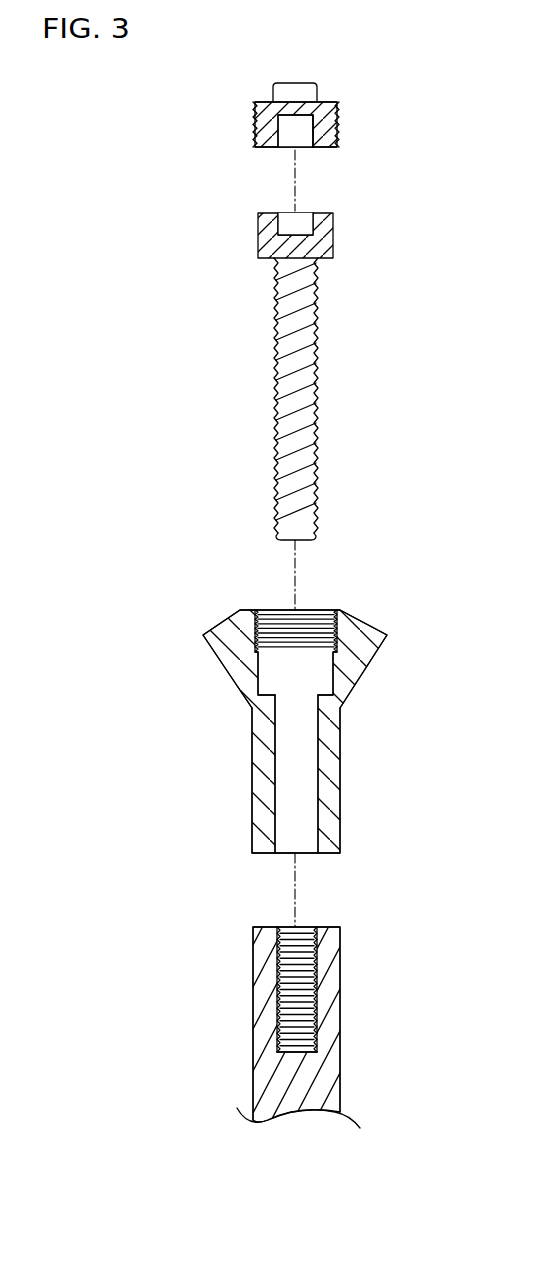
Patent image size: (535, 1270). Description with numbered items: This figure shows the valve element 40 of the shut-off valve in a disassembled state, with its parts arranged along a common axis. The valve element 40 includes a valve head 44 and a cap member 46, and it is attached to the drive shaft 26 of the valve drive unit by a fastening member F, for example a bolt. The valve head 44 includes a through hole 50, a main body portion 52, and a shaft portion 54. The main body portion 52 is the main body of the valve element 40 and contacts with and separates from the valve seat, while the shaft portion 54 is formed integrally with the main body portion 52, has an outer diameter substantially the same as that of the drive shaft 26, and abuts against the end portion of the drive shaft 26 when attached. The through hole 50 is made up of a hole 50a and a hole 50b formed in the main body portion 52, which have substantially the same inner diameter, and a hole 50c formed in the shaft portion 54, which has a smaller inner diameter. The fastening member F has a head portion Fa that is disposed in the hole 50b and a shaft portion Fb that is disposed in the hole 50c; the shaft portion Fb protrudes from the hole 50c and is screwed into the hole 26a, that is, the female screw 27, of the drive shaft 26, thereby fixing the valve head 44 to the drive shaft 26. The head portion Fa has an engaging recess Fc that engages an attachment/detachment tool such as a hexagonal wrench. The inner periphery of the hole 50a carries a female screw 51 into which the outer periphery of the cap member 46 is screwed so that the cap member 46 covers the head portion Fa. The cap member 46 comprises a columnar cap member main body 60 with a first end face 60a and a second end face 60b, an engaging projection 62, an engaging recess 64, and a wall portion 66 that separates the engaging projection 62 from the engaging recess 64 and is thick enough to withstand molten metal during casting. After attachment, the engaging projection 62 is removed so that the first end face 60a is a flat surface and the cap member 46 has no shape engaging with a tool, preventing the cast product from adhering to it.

The valve element 40 is at (121, 100).
The cap member 46 is at (165, 66).
The engaging projection 62 is at (272, 86).
The cap member main body 60 is at (241, 132).
The first end face 60a is at (322, 104).
The second end face 60b is at (267, 148).
The engaging recess 64 is at (305, 144).
The wall portion 66 is at (326, 109).
The fastening member F is at (404, 185).
The head portion Fa is at (334, 241).
The shaft portion Fb is at (318, 315).
The engaging recess Fc is at (300, 233).
The valve head 44 is at (165, 705).
The through hole 50 is at (450, 583).
The hole 50a is at (356, 615).
The female screw 51 is at (323, 612).
The hole 50b is at (335, 677).
The hole 50c is at (320, 753).
The main body portion 52 is at (248, 701).
The shaft portion 54 is at (252, 780).
The drive shaft 26 is at (253, 982).
The hole 26a is at (352, 972).
The female screw 27 is at (308, 926).